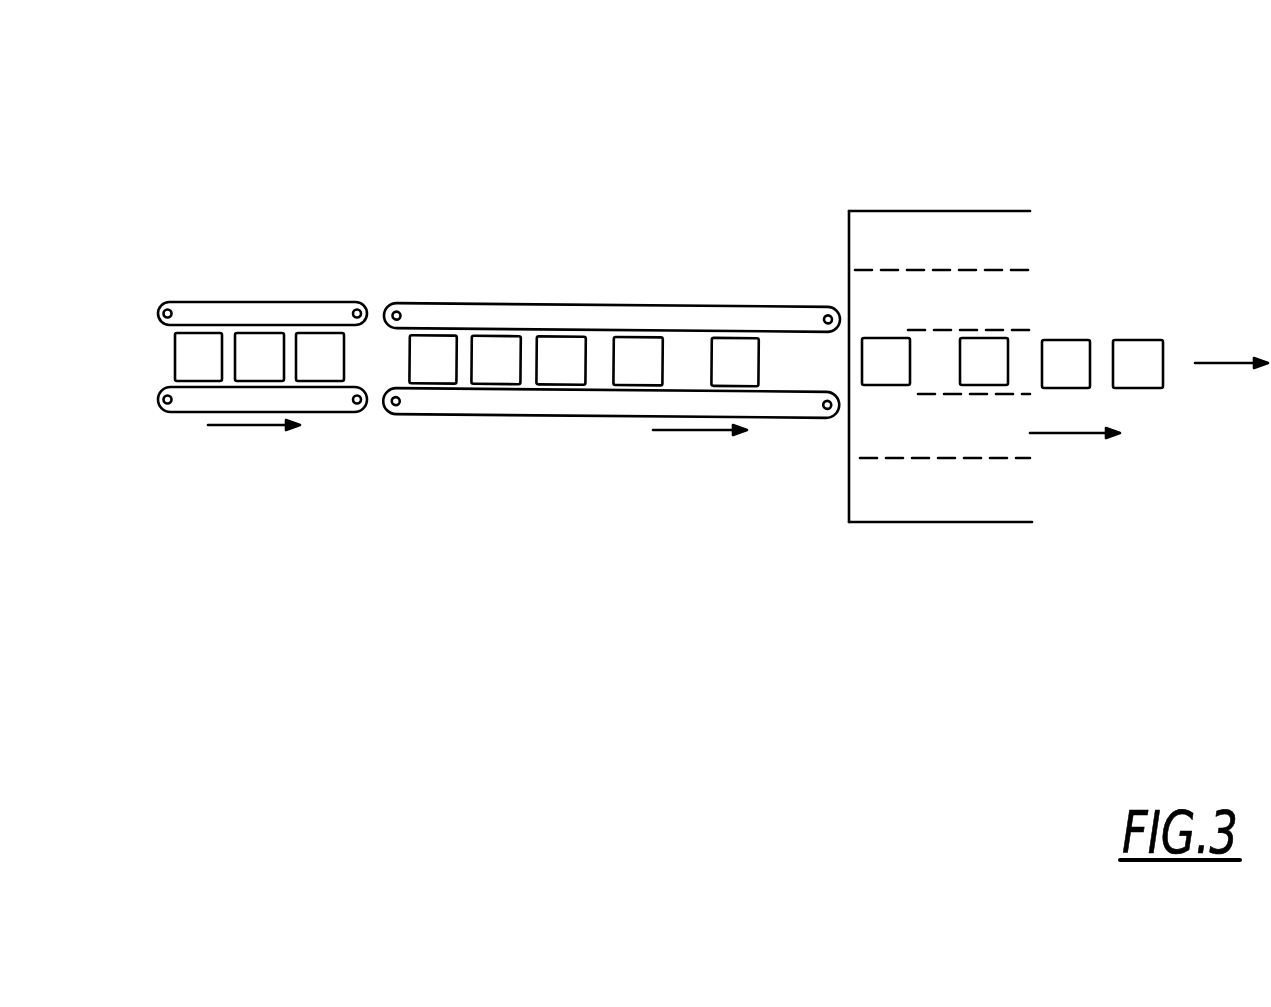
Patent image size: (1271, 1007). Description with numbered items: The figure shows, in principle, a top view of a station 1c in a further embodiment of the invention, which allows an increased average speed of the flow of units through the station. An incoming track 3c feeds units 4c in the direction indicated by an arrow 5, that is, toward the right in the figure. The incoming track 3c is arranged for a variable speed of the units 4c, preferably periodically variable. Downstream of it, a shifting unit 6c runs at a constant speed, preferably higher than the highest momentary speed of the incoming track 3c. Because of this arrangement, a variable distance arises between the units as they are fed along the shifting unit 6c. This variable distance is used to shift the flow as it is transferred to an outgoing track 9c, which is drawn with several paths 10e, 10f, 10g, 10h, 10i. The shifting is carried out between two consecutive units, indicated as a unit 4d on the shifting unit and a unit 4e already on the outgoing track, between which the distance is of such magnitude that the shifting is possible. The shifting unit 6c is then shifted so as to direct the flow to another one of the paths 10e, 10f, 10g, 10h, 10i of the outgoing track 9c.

The station 1c is at (580, 135).
The incoming track 3c is at (250, 312).
The units 4c is at (183, 356).
The arrow 5 is at (262, 428).
The shifting unit 6c is at (604, 318).
The unit 4d is at (743, 368).
The outgoing track 9c is at (879, 222).
The unit 4e is at (883, 372).
The path 10e is at (992, 508).
The path 10f is at (1003, 443).
The path 10g is at (938, 355).
The path 10h is at (998, 287).
The path 10i is at (1007, 233).